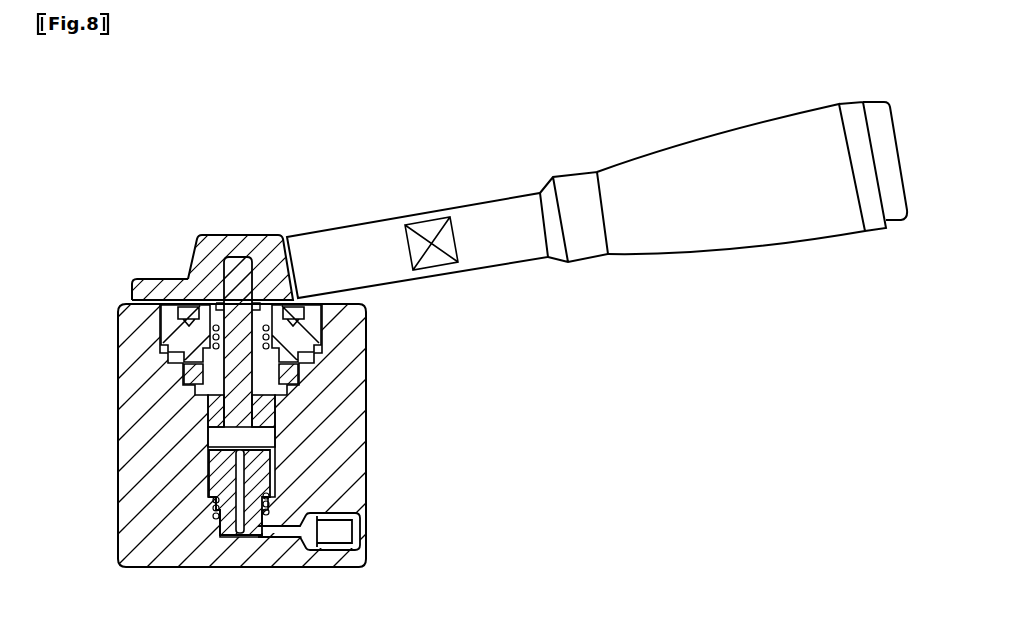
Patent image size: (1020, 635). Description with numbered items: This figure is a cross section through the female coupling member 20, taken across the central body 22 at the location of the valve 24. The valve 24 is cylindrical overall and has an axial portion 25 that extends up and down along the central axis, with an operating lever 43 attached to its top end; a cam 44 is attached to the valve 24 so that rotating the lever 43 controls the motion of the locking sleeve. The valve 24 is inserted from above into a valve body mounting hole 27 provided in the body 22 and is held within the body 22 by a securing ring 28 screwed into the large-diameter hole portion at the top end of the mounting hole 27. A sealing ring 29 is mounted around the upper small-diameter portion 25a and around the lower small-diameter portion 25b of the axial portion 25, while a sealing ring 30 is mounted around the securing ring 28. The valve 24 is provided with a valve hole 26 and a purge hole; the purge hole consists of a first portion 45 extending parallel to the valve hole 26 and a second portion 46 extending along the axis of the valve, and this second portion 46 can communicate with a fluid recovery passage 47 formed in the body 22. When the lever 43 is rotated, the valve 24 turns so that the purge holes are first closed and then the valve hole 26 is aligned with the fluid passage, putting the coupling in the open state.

The female coupling member 20 is at (113, 322).
The female coupling member body 22 is at (135, 433).
The valve 24 is at (278, 408).
The axial portion 25 is at (222, 402).
The upper small-diameter portion 25a is at (180, 334).
The lower small-diameter portion 25b is at (216, 521).
The valve hole 26 is at (277, 437).
The valve body mounting hole 27 is at (190, 380).
The securing ring 28 is at (132, 288).
The sealing ring 29 is at (325, 333).
The sealing ring 30 is at (300, 372).
The operating lever 43 is at (665, 155).
The cam 44 is at (167, 280).
The first portion of the purge hole 45 is at (212, 478).
The second portion of the purge hole 46 is at (272, 493).
The fluid recovery passage 47 is at (277, 535).